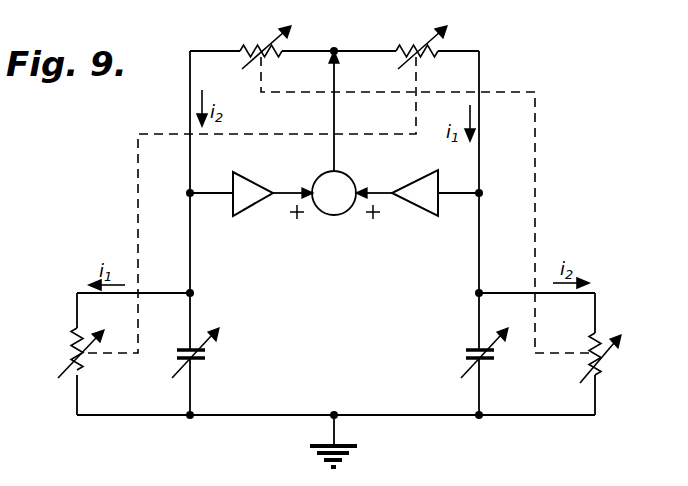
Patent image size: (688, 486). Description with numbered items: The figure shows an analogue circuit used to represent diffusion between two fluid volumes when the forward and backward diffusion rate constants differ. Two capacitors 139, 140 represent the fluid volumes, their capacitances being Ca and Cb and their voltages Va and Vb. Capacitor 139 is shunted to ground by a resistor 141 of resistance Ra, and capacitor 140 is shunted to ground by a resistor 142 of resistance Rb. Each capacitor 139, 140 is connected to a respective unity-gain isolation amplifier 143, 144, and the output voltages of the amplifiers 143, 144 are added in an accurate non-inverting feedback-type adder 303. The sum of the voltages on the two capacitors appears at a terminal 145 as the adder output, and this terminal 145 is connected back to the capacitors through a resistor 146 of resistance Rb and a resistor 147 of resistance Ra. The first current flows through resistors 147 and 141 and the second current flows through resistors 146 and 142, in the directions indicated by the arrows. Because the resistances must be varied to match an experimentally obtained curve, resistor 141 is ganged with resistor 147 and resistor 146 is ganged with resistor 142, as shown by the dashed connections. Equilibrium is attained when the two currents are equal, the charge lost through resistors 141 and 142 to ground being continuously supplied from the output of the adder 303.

The capacitor 139 is at (200, 362).
The capacitor 140 is at (476, 350).
The resistor 141 is at (80, 376).
The resistor 142 is at (592, 378).
The isolation amplifier 143 is at (243, 219).
The isolation amplifier 144 is at (420, 218).
The terminal 145 is at (338, 48).
The resistor 146 is at (274, 47).
The resistor 147 is at (432, 47).
The adder 303 is at (329, 216).